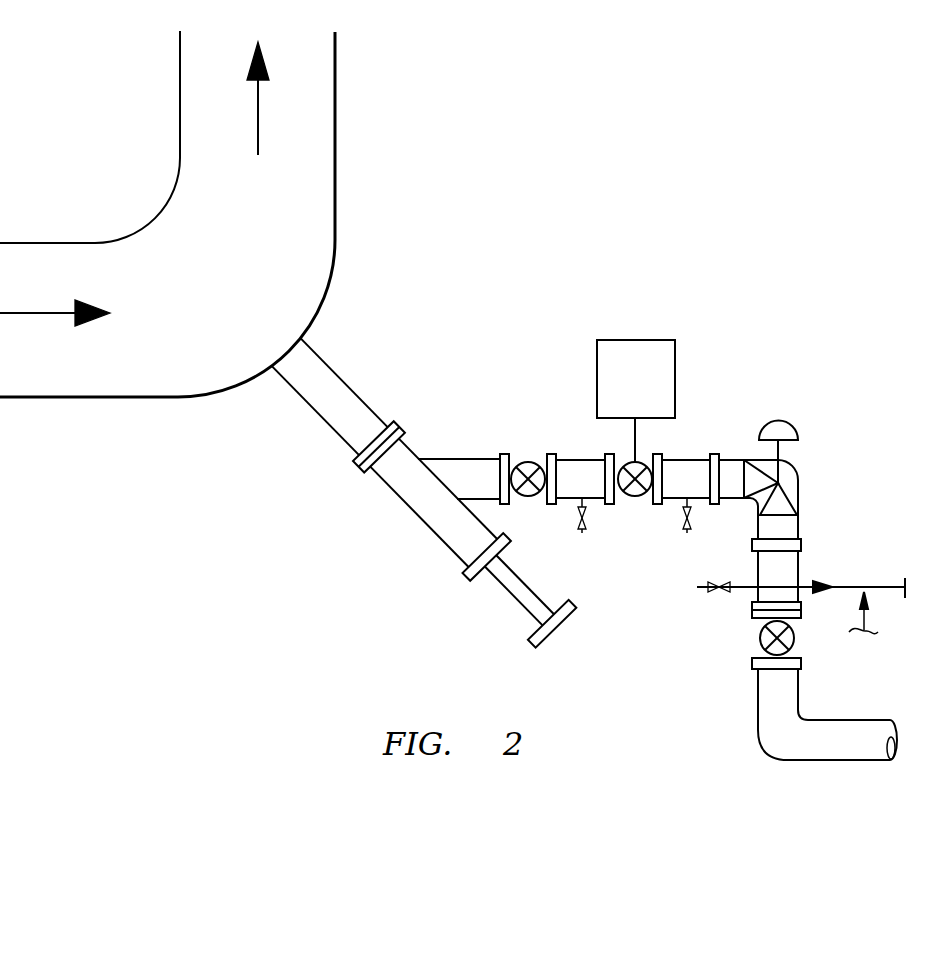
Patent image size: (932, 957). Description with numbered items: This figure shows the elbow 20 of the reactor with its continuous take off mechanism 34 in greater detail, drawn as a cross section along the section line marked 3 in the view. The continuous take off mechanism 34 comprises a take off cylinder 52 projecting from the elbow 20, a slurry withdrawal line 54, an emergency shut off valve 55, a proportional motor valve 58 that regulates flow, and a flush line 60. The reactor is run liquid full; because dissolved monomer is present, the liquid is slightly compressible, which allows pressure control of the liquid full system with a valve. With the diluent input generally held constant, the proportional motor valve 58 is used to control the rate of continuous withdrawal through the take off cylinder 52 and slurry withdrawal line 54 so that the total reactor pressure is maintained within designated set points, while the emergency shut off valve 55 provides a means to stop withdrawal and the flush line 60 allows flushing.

The elbow 20 is at (335, 182).
The section line 3- 3 is at (284, 305).
The take off cylinder 52 is at (333, 371).
The continuous take off mechanism 34 is at (432, 424).
The slurry withdrawal line 54 is at (531, 446).
The emergency shut off valve 55 is at (657, 393).
The proportional motor valve 58 is at (788, 426).
The flush line 60 is at (738, 590).